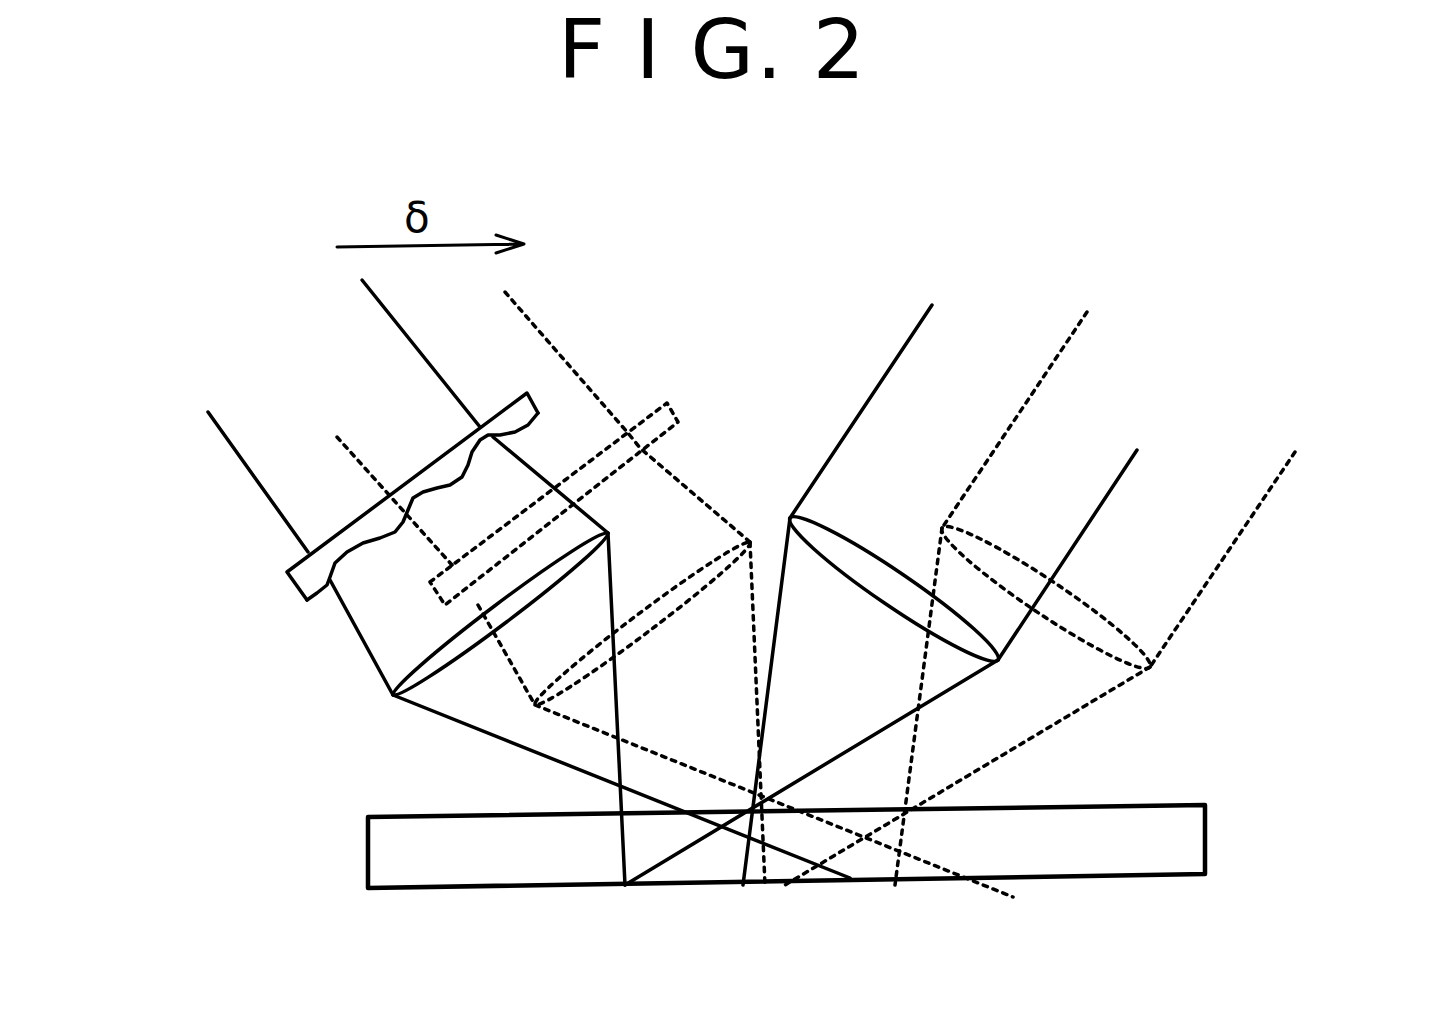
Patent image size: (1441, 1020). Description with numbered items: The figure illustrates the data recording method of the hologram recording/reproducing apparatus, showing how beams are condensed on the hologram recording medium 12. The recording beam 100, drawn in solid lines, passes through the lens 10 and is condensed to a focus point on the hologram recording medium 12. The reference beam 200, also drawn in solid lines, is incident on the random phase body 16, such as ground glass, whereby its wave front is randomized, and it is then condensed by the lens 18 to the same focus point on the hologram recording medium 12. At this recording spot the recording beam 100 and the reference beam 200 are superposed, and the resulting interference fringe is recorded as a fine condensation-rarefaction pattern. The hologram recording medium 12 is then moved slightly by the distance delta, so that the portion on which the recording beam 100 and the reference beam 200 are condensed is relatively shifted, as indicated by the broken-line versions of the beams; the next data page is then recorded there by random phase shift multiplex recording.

The reference beam 200 is at (436, 422).
The random phase body 16 is at (285, 593).
The lens 18 is at (405, 708).
The lens 10 is at (775, 512).
The recording beam 100 is at (993, 330).
The hologram recording medium 12 is at (1212, 840).